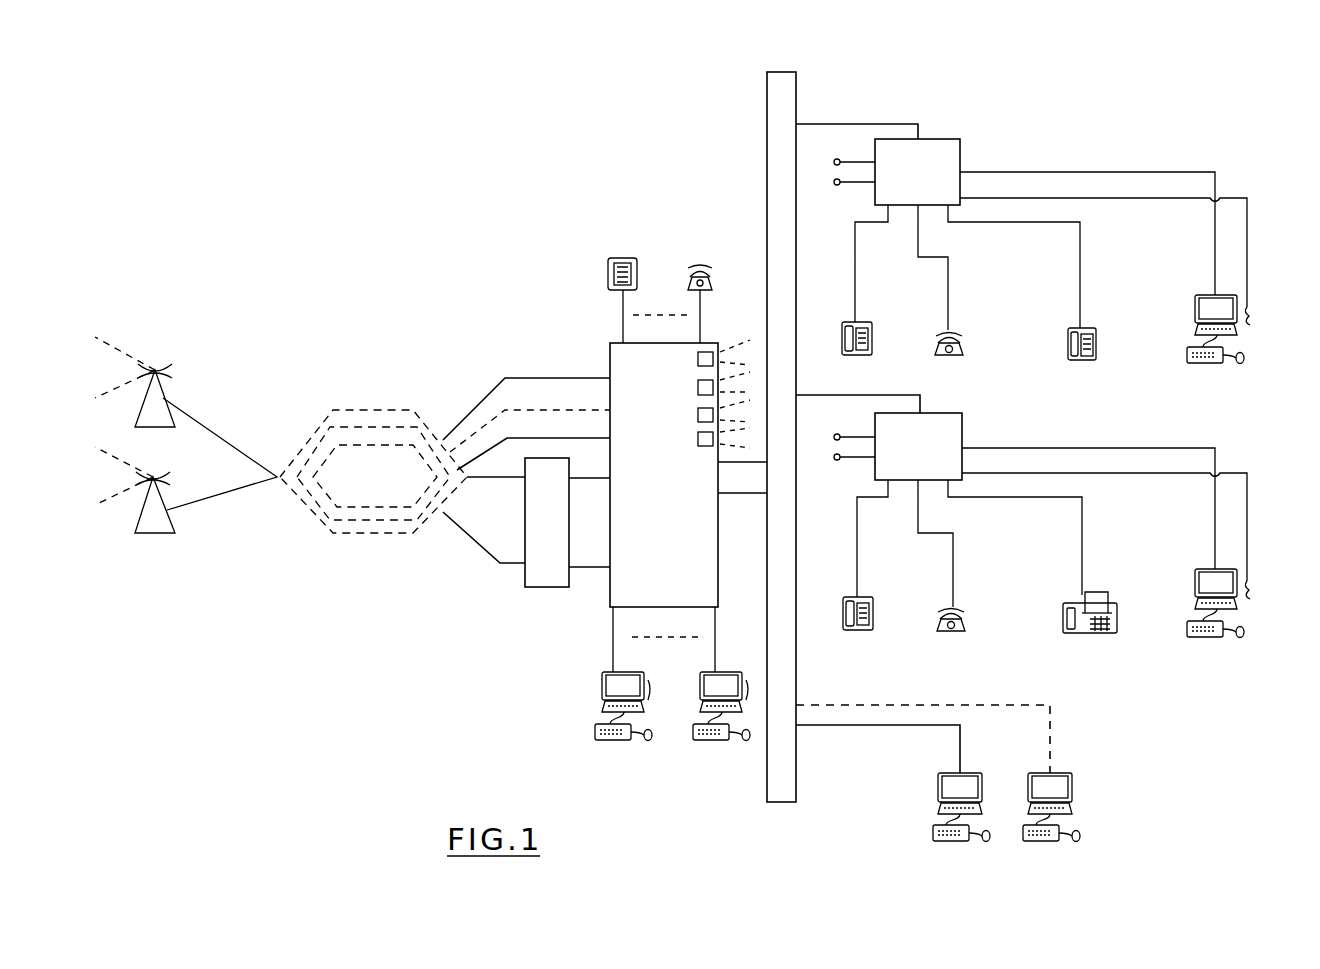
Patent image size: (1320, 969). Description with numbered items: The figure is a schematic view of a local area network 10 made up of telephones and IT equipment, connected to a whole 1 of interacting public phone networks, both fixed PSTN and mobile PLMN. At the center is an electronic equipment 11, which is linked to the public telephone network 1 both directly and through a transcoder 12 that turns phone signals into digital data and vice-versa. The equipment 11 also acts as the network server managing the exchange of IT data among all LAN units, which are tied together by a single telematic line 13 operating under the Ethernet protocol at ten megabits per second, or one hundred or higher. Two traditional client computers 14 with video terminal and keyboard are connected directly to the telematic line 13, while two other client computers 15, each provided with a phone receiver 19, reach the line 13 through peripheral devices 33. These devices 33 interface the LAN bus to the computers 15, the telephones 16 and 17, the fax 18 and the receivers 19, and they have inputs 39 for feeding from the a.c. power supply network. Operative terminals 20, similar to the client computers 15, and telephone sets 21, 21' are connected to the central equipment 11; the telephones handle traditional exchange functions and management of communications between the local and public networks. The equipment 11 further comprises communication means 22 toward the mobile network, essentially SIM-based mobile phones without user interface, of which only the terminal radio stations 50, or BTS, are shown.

The whole of phone networks 1 is at (357, 420).
The local area network 10 is at (660, 121).
The electronic equipment 11 is at (617, 370).
The transcoder 12 is at (530, 580).
The telematic line 13 is at (775, 165).
The client computers 14 is at (937, 805).
The client computers 15 is at (1193, 308).
The telephone 16 is at (872, 340).
The telephone 17 is at (960, 346).
The fax 18 is at (1117, 618).
The phone receiver 19 is at (1251, 306).
The operative terminals 20 is at (713, 740).
The telephone set 21 is at (596, 288).
The telephone set 21' is at (681, 285).
The communication means 22 is at (698, 440).
The peripheral devices 33 is at (962, 158).
The inputs 39 is at (858, 183).
The terminal radio stations 50 is at (158, 392).